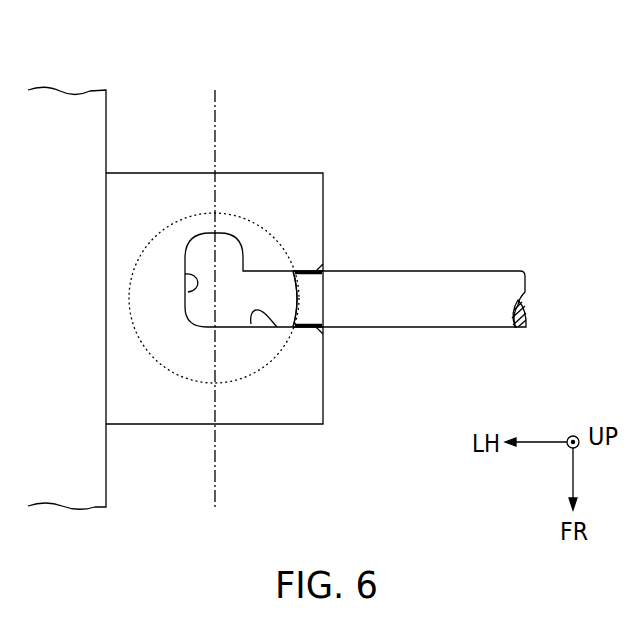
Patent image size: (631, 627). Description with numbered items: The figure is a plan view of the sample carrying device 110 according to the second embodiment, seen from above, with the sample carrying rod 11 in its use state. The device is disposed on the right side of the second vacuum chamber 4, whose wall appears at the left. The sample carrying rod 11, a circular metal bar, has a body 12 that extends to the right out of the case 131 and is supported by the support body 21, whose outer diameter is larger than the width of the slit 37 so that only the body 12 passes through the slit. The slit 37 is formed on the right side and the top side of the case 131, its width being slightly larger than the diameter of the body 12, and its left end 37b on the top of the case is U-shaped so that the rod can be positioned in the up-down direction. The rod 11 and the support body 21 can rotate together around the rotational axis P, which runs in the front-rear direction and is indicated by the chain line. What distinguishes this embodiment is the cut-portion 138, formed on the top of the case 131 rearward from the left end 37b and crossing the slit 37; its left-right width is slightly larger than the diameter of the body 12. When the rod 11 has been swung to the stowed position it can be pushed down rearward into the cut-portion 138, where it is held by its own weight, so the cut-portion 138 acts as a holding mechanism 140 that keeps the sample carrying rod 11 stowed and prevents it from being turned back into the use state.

The second vacuum chamber 4 is at (67, 106).
The sample carrying device 110 is at (233, 246).
The case 131 is at (157, 190).
The cut-portion 138 is at (254, 211).
The holding mechanism 140 is at (243, 260).
The left end of the slit 37b is at (185, 274).
The slit 37 is at (277, 327).
The sample carrying rod 11 is at (410, 272).
The body 12 is at (463, 283).
The support body 21 is at (278, 290).
The rotational axis P is at (216, 482).